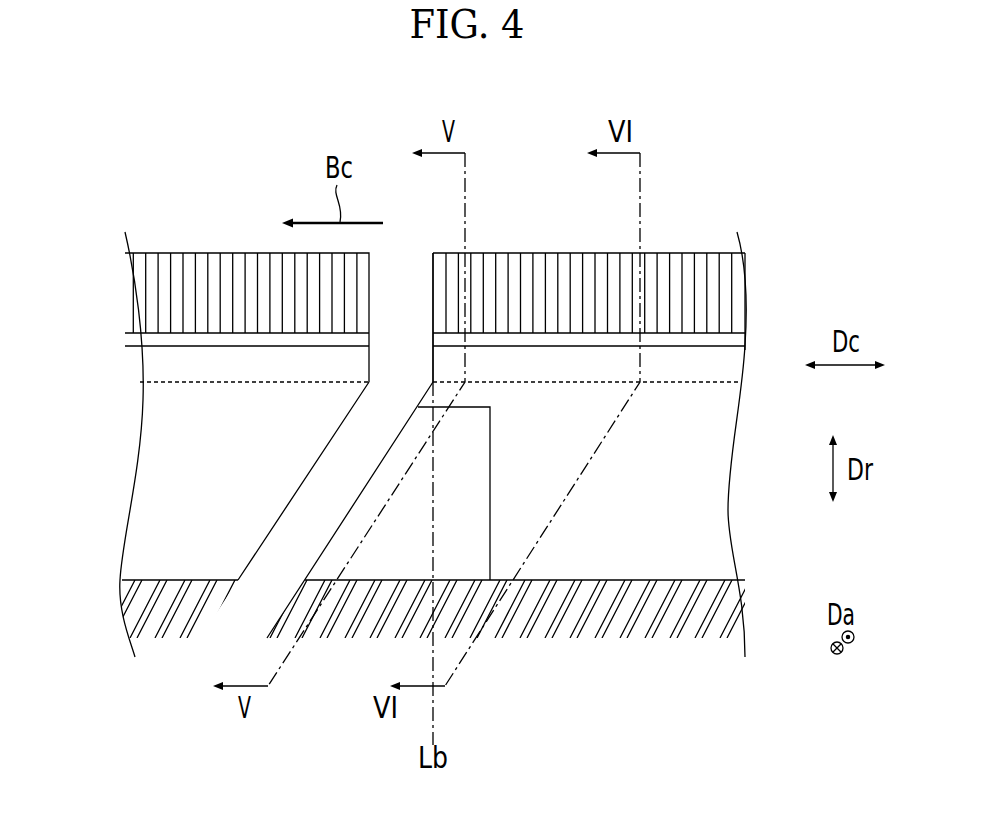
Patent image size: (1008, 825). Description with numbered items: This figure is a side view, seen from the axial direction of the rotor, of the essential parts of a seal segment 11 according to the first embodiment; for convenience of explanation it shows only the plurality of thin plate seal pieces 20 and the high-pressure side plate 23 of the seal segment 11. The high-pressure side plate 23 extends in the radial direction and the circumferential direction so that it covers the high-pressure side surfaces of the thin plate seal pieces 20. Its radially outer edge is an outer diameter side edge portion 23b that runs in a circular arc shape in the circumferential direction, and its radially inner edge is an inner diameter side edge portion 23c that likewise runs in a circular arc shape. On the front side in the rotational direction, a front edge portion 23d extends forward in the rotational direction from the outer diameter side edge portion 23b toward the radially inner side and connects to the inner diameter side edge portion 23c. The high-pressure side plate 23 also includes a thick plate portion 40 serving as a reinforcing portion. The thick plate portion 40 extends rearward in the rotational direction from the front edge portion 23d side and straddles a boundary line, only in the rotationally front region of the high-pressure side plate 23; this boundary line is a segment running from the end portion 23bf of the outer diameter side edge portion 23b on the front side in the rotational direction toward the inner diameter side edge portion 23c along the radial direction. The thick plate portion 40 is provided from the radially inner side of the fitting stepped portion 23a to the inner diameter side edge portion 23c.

The seal segment 11 is at (772, 143).
The thin plate seal pieces 20 is at (145, 298).
The high-pressure side plate 23 is at (155, 467).
The fitting stepped portion 23a is at (733, 372).
The outer diameter side edge portion 23b is at (740, 347).
The end portion 23bf is at (433, 343).
The inner diameter side edge portion 23c is at (710, 580).
The front edge portion 23d is at (330, 553).
The thick plate portion 40 is at (491, 553).